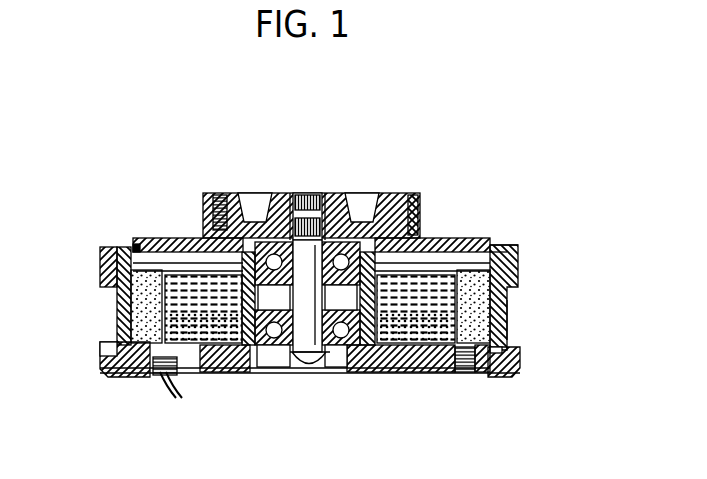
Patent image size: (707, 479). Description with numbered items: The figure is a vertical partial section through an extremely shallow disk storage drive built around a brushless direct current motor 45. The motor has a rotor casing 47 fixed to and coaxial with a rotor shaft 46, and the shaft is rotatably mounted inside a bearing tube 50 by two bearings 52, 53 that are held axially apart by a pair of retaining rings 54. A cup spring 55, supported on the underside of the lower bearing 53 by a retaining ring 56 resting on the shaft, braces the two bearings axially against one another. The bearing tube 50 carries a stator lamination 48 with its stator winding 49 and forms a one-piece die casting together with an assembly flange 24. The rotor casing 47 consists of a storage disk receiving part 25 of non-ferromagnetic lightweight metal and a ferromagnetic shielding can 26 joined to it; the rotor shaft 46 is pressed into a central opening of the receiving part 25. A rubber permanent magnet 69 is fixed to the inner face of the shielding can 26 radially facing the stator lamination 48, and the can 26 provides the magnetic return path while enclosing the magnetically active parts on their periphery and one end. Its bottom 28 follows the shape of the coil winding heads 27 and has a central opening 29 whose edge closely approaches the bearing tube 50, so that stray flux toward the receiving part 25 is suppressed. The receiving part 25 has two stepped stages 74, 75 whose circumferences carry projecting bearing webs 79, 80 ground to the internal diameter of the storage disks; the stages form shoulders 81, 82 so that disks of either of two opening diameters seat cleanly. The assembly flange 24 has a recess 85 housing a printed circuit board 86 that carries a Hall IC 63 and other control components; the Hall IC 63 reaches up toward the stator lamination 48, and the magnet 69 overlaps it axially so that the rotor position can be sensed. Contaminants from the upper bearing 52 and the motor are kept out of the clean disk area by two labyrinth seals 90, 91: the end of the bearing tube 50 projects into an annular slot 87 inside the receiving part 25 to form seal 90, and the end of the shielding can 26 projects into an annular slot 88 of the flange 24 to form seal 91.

The assembly flange 24 is at (515, 377).
The storage disk receiving part 25 is at (398, 197).
The shielding can 26 is at (125, 315).
The coil winding heads 27 is at (470, 240).
The bottom of shielding can 28 is at (150, 240).
The central opening 29 is at (428, 228).
The brushless direct current motor 45 is at (592, 293).
The rotor shaft 46 is at (311, 194).
The rotor casing 47 is at (85, 278).
The stator lamination 48 is at (505, 320).
The stator winding 49 is at (433, 342).
The bearing tube 50 is at (507, 297).
The bearing 52 is at (352, 194).
The bearing 53 is at (360, 376).
The retaining rings 54 is at (256, 243).
The cup spring 55 is at (344, 352).
The retaining ring 56 is at (292, 355).
The Hall IC 63 is at (122, 376).
The permanent magnet 69 is at (120, 325).
The stepped stage 74 is at (508, 244).
The stepped stage 75 is at (212, 194).
The bearing webs 79 is at (125, 245).
The bearing webs 80 is at (200, 222).
The shoulder 81 is at (505, 247).
The shoulder 82 is at (478, 238).
The recess 85 is at (208, 376).
The printed circuit board 86 is at (160, 374).
The annular slot 87 is at (383, 192).
The annular slot 88 is at (497, 378).
The labyrinth seal 90 is at (268, 194).
The labyrinth seal 91 is at (510, 353).